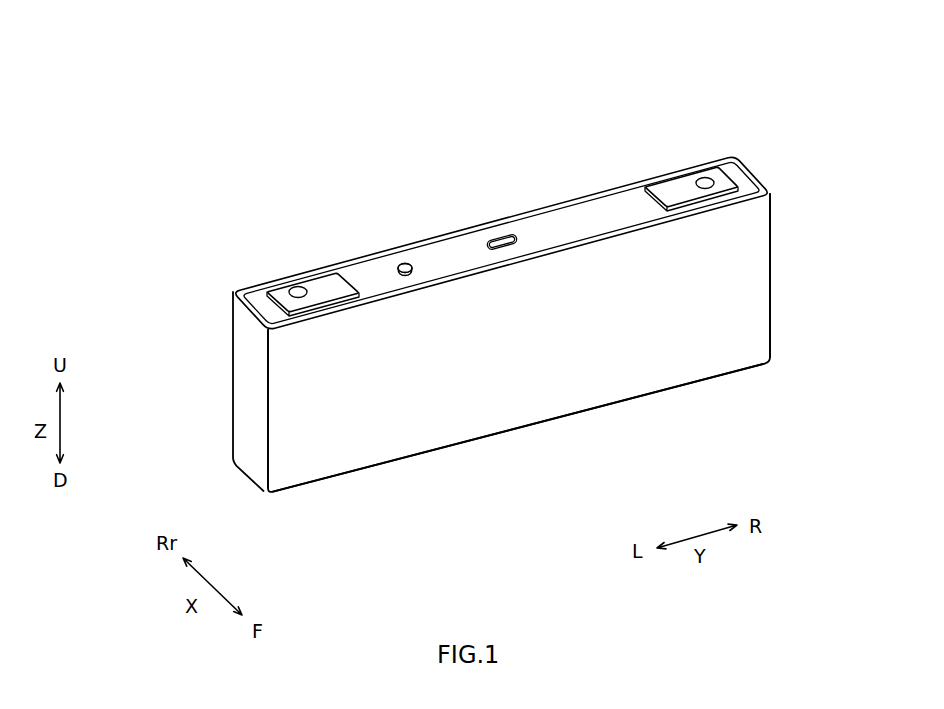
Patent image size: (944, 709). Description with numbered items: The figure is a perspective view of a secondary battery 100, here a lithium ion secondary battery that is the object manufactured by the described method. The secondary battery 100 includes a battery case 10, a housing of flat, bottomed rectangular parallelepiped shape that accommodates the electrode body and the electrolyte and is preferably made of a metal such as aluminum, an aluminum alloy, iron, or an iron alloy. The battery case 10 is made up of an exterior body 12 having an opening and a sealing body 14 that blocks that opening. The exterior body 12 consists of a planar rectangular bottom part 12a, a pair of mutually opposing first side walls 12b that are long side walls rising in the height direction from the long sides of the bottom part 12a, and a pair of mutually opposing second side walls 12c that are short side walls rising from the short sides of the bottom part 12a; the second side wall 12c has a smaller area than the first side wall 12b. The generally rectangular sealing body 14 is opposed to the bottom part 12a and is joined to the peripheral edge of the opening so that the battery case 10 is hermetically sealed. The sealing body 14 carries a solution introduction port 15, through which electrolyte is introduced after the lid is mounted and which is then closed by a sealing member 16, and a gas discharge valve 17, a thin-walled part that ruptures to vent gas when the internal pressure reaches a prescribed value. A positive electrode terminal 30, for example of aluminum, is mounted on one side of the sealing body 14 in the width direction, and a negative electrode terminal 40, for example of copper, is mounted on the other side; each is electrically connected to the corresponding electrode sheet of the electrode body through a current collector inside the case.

The secondary battery 100 is at (528, 267).
The battery case 10 is at (528, 307).
The exterior body 12 is at (528, 331).
The bottom part 12a is at (478, 440).
The first side walls 12b is at (473, 222).
The second side walls 12c is at (772, 341).
The sealing body 14 is at (501, 232).
The solution introduction port 15 is at (412, 262).
The sealing member 16 is at (403, 262).
The gas discharge valve 17 is at (502, 232).
The positive electrode terminal 30 is at (293, 287).
The negative electrode terminal 40 is at (704, 177).